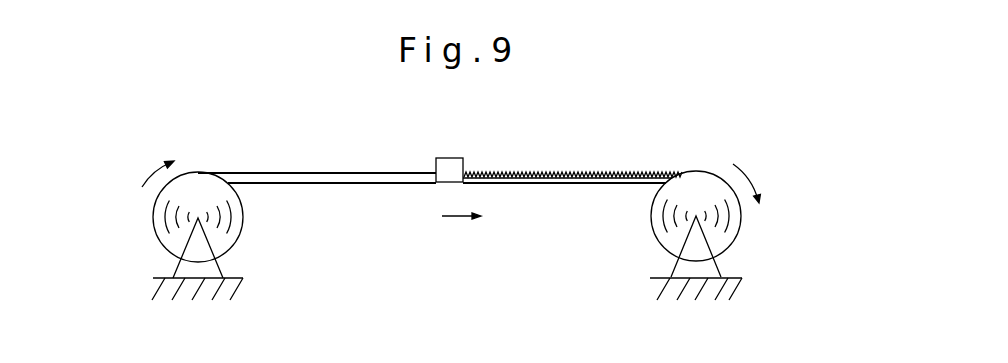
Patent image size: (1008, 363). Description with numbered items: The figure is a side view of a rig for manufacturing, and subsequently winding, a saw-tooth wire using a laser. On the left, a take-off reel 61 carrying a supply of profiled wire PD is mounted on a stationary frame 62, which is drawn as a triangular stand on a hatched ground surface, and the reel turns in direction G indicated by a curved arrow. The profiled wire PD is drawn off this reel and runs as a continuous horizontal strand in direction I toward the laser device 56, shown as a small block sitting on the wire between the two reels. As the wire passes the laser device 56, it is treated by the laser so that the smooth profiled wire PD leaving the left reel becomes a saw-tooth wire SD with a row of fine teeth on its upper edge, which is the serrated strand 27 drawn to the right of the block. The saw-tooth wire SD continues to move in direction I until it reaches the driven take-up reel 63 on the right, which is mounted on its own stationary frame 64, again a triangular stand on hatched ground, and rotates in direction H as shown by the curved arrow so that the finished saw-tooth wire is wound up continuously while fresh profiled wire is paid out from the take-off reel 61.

The toothed belt 27 is at (585, 173).
The laser device 56 is at (453, 168).
The take-off reel 61 is at (165, 226).
The stationary frame 62 is at (208, 270).
The driven take-up reel 63 is at (722, 220).
The stationary frame 64 is at (685, 264).
The profiled wire PD is at (312, 187).
The saw-tooth wire SD is at (563, 186).
The direction of rotation of take-off reel G is at (152, 173).
The direction of rotation of take-up reel H is at (735, 165).
The direction of wire travel I is at (457, 218).